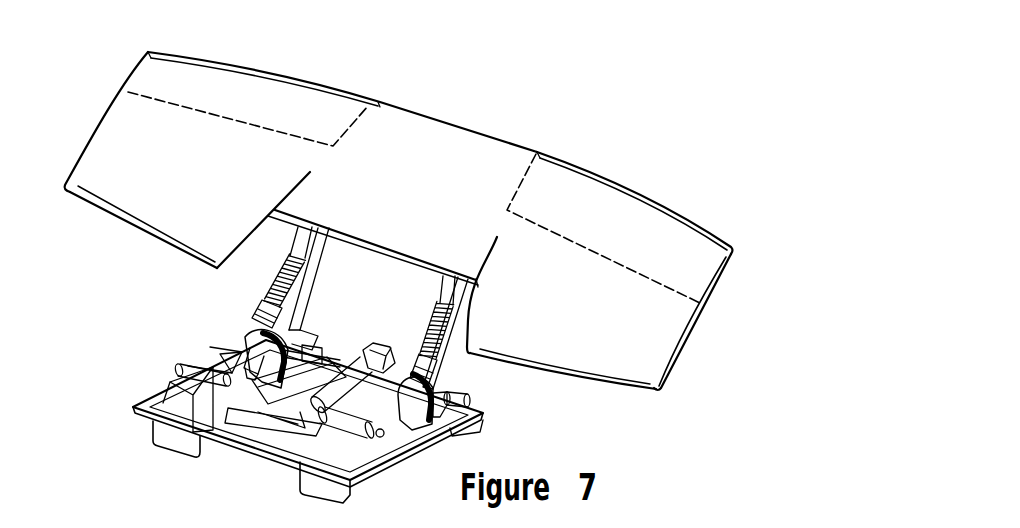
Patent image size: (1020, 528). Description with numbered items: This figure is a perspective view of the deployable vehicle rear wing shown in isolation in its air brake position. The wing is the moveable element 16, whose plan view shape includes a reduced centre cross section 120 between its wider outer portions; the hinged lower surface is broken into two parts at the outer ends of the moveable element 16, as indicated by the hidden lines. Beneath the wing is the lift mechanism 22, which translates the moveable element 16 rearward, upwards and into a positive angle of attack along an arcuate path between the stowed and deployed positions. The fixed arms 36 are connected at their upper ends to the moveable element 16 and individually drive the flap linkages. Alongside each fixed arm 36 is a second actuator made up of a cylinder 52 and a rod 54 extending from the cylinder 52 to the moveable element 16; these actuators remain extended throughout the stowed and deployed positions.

The moveable element 16 is at (647, 195).
The reduced centre cross section 120 is at (403, 260).
The fixed arms 36 is at (315, 247).
The rod 54 is at (298, 243).
The cylinder 52 is at (243, 347).
The lift mechanism 22 is at (467, 377).